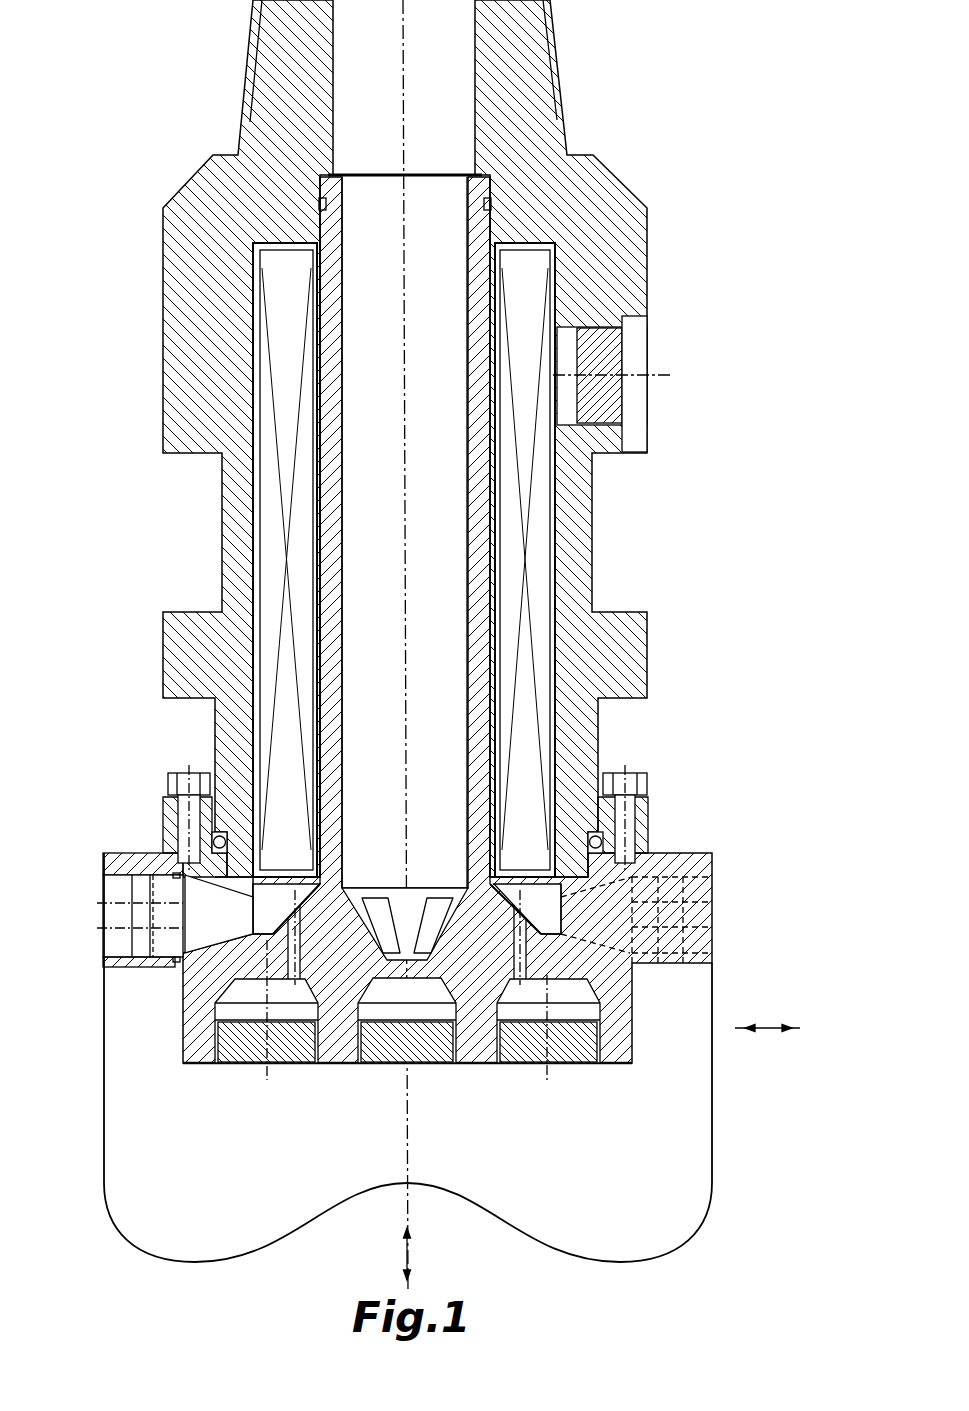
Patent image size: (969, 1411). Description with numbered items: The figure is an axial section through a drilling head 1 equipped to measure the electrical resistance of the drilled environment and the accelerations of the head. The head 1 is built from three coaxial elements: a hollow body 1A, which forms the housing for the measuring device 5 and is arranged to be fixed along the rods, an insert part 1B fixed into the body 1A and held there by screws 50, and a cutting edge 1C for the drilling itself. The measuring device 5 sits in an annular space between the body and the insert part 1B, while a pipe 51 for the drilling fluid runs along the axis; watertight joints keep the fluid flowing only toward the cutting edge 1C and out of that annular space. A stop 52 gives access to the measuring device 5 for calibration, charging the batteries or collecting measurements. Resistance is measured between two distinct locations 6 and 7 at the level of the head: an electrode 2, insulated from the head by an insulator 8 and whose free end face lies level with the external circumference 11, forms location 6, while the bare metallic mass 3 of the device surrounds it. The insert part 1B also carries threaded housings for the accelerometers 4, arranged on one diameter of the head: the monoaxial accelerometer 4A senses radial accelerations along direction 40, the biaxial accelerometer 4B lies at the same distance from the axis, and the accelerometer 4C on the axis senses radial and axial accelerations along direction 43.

The drilling head 1 is at (732, 1150).
The hollow body 1A is at (615, 280).
The insert part 1B is at (615, 997).
The cutting edge 1C is at (683, 1092).
The electrode 2 is at (117, 915).
The metallic mass 3 is at (118, 865).
The accelerometers 4 is at (510, 1058).
The accelerometer 4A is at (253, 1065).
The accelerometer 4B is at (527, 1067).
The accelerometer 4C is at (397, 1065).
The measuring device 5 is at (528, 845).
The measurement location 6 is at (100, 918).
The measurement location 7 is at (100, 865).
The insulator 8 is at (100, 947).
The external circumference 11 is at (723, 922).
The direction 40 is at (763, 1027).
The direction 43 is at (412, 1247).
The screws 50 is at (650, 775).
The pipe 51 is at (433, 603).
The stop 52 is at (615, 398).